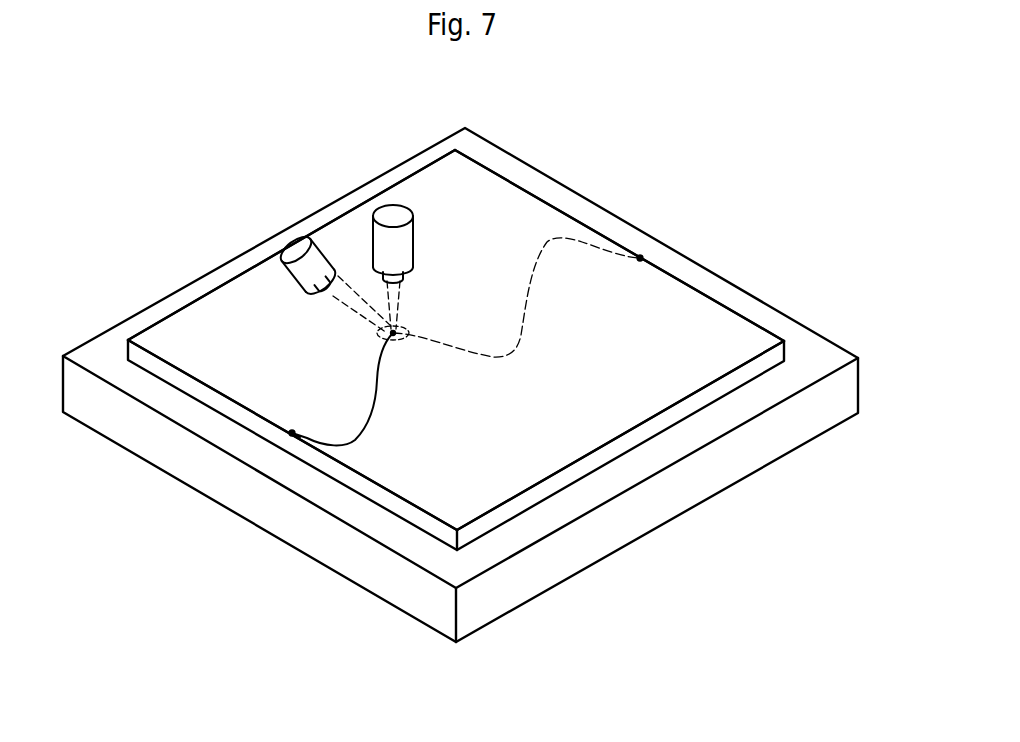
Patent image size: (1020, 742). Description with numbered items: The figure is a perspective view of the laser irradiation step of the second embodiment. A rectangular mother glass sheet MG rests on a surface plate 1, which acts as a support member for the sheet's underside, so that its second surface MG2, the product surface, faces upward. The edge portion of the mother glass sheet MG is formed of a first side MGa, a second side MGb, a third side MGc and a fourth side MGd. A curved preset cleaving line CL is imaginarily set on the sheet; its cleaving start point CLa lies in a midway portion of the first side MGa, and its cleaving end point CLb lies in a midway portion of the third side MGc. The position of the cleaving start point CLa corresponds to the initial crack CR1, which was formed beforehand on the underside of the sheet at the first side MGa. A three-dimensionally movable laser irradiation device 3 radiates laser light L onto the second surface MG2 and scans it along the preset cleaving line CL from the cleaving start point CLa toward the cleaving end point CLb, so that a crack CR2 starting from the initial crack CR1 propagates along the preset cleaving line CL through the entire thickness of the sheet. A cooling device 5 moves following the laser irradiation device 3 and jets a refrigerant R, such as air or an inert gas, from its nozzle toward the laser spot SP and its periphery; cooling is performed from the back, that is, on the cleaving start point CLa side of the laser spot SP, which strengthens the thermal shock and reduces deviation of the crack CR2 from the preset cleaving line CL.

The surface plate 1 is at (707, 472).
The mother glass sheet MG is at (427, 375).
The first side MGa is at (225, 397).
The second side MGb is at (555, 475).
The third side MGc is at (498, 173).
The fourth side MGd is at (195, 299).
The second surface MG2 is at (240, 300).
The laser irradiation device 3 is at (392, 208).
The cooling device 5 is at (318, 260).
The laser light L is at (400, 297).
The refrigerant R is at (347, 312).
The laser spot SP is at (395, 337).
The preset cleaving line CL is at (548, 238).
The cleaving start point CLa is at (292, 435).
The cleaving end point CLb is at (641, 256).
The initial crack CR1 is at (292, 435).
The crack CR2 is at (373, 372).